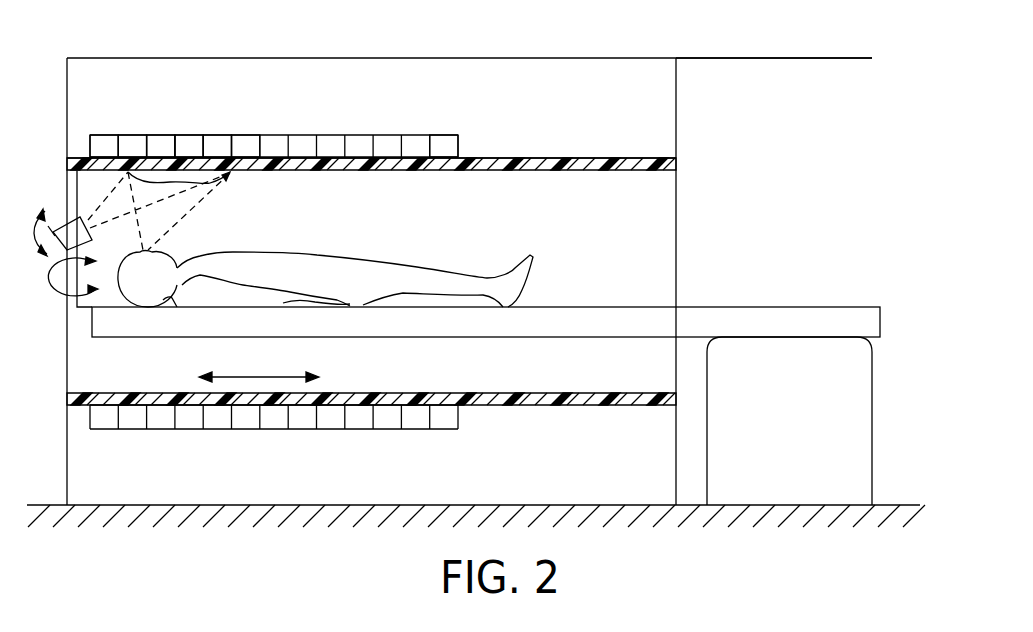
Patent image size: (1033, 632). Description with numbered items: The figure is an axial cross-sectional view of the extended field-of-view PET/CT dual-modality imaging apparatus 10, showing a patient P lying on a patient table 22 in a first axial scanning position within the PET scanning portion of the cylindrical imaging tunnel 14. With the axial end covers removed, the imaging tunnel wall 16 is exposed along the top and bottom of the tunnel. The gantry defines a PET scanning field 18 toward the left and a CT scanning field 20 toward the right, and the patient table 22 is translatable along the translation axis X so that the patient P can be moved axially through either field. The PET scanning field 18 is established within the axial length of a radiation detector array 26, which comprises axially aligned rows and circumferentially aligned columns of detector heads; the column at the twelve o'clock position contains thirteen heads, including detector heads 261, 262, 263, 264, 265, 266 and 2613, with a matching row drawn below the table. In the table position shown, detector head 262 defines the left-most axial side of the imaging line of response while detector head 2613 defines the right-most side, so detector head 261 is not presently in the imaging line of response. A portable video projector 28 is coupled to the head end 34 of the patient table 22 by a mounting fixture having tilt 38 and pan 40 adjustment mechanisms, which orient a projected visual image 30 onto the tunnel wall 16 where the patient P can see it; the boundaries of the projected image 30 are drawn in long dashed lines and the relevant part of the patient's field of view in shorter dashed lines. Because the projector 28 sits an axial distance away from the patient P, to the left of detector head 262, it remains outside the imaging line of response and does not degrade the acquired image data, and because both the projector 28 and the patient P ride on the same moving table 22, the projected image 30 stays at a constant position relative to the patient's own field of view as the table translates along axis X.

The imaging apparatus 10 is at (700, 118).
The imaging tunnel 14 is at (500, 208).
The imaging tunnel wall 16 is at (587, 170).
The PET scanning field 18 is at (222, 58).
The CT scanning field 20 is at (602, 61).
The patient table 22 is at (467, 333).
The radiation detector array 26 is at (343, 123).
The detector head 261 is at (98, 137).
The detector head 262 is at (133, 145).
The detector head 263 is at (163, 147).
The detector head 264 is at (190, 142).
The detector head 265 is at (222, 143).
The detector head 266 is at (245, 140).
The detector head 2613 is at (442, 147).
The projector 28 is at (52, 225).
The projected visual image 30 is at (212, 183).
The head end 34 is at (100, 340).
The tilt adjustment mechanism 38 is at (25, 232).
The pan adjustment mechanism 40 is at (62, 293).
The patient P is at (305, 273).
The translation axis X is at (259, 362).